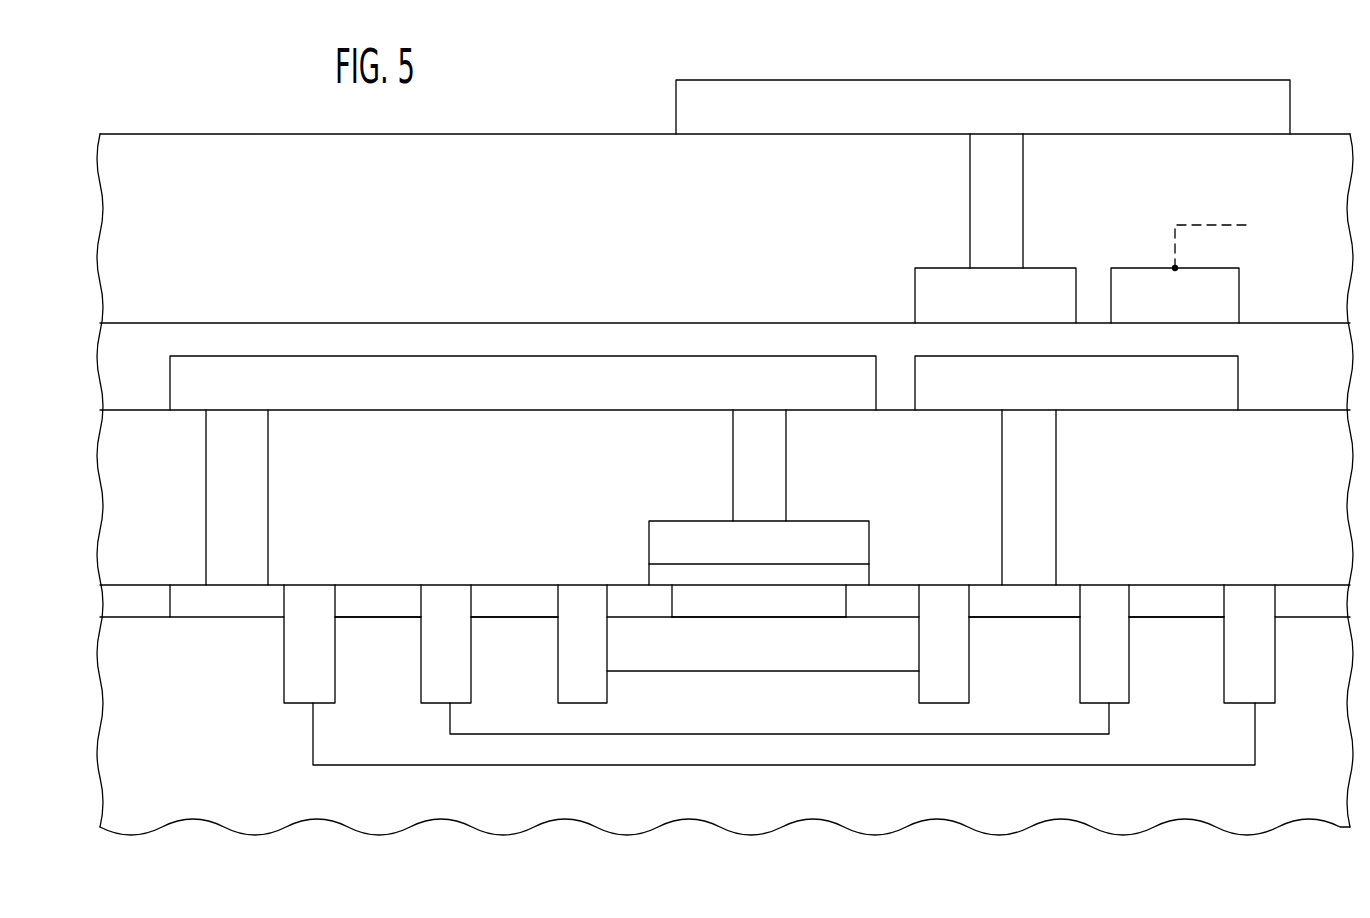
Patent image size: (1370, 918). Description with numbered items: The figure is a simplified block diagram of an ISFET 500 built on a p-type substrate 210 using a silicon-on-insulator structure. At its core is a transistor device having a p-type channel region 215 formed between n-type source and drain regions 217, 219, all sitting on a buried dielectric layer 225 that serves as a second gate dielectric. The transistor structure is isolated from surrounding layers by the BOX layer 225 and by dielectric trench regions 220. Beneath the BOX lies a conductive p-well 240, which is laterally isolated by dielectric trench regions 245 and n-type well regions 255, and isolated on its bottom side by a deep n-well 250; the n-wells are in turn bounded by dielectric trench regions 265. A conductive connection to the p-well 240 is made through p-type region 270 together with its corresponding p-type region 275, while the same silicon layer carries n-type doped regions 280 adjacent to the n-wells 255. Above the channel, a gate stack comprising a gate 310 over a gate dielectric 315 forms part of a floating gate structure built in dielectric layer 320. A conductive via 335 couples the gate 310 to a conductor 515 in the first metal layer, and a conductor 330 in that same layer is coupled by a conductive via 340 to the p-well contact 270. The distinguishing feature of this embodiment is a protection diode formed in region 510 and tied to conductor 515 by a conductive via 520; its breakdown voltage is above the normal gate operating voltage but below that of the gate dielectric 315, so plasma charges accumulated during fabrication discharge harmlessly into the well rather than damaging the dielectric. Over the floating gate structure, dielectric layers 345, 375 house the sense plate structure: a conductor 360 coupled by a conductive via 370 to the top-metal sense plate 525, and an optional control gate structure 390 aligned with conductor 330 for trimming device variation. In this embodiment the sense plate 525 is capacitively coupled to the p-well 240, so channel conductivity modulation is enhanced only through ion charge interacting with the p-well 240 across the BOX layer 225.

The ISFET 500 is at (989, 38).
The sense plate 525 is at (974, 118).
The dielectric layer 375 is at (156, 237).
The conductive via 370 is at (1023, 186).
The conductor 360 is at (1011, 308).
The control gate structure 390 is at (1191, 307).
The dielectric layer 345 is at (153, 377).
The conductor 515 is at (548, 395).
The conductor 330 is at (1095, 394).
The dielectric layer 320 is at (154, 494).
The conductive via 520 is at (268, 478).
The conductive via 335 is at (786, 461).
The conductive via 340 is at (1056, 461).
The gate 310 is at (771, 553).
The gate dielectric 315 is at (862, 578).
The substrate 210 is at (1318, 790).
The protection diode region 510 is at (182, 598).
The n-type doped region 280 is at (373, 598).
The p-type region 275 is at (505, 598).
The source region 217 is at (620, 598).
The drain region 219 is at (880, 610).
The buried dielectric layer 225 is at (814, 659).
The channel region 215 is at (710, 610).
The dielectric trench region 220 is at (599, 666).
The dielectric trench region 245 is at (463, 664).
The dielectric trench region 265 is at (326, 664).
The n-type well region 255 is at (391, 684).
The p-type region 270 is at (1030, 610).
The p-well 240 is at (778, 717).
The deep n-well 250 is at (1017, 757).